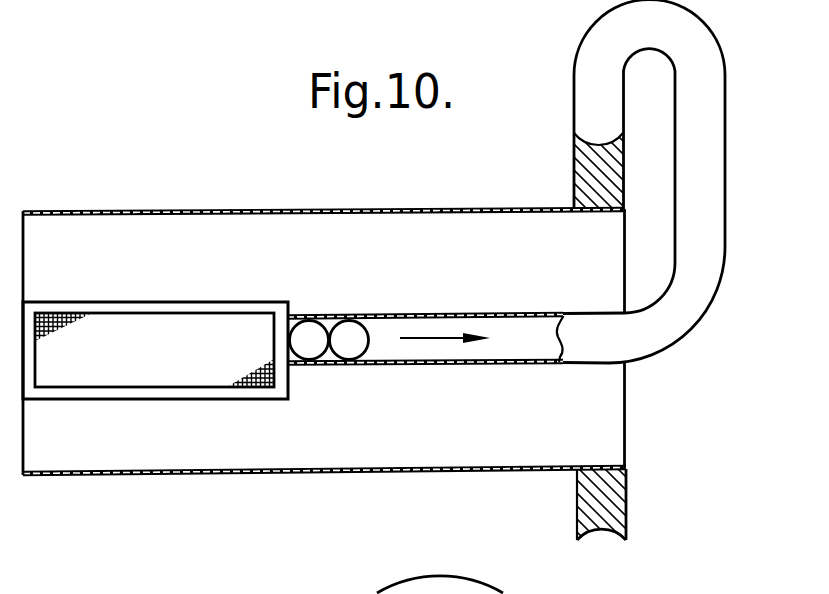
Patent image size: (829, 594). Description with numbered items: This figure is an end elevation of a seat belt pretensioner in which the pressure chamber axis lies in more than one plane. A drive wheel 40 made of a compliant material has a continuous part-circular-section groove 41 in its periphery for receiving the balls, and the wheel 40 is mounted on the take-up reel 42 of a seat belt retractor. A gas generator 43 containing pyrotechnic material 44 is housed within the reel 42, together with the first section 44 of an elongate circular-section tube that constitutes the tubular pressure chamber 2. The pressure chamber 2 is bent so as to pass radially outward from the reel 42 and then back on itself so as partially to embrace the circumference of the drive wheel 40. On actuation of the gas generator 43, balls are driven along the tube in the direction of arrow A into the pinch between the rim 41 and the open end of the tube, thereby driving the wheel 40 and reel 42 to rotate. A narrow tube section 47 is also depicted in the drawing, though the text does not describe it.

The pressure chamber 2 is at (578, 79).
The drive wheel 40 is at (580, 512).
The groove 41 is at (607, 537).
The take-up reel 42 is at (172, 211).
The gas generator 43 is at (232, 393).
The pyrotechnic material 44 is at (159, 353).
The narrow transport tube 47 is at (434, 326).